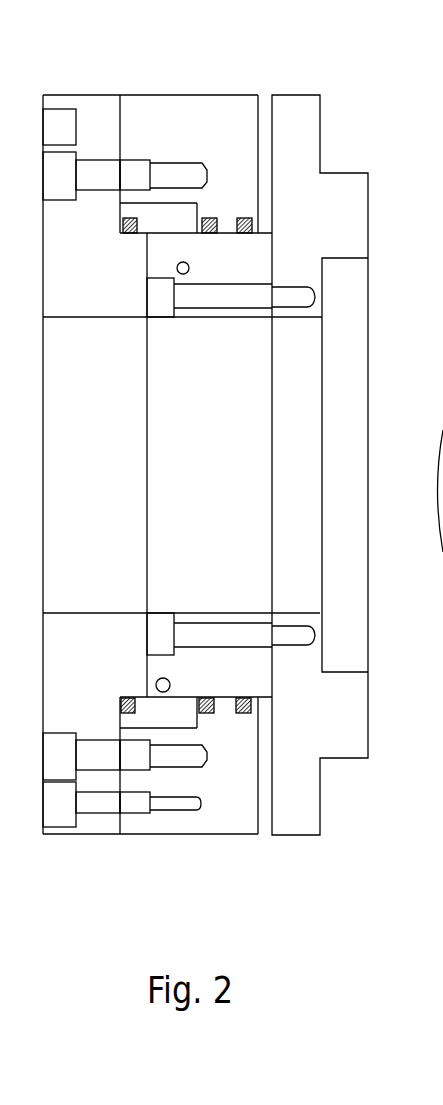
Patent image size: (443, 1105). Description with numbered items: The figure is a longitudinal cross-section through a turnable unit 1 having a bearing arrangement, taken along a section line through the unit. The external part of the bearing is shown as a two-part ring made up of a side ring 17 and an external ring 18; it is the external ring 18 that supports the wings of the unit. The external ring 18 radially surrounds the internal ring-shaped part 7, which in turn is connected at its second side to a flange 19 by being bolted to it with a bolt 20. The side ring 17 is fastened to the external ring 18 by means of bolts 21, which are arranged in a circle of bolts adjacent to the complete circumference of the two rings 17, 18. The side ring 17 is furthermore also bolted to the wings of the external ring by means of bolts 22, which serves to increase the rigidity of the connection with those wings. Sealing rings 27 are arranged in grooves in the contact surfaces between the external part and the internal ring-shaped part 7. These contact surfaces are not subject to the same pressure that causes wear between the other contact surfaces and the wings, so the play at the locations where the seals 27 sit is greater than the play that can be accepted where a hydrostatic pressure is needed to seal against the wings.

The sensor assembly 1 is at (143, 73).
The internal ring-shaped part 7 is at (233, 682).
The side ring 17 is at (100, 825).
The external ring 18 is at (233, 815).
The flange 19 is at (333, 715).
The bolt 20 is at (247, 633).
The bolts 21 is at (65, 760).
The bolts 22 is at (55, 815).
The sealing rings 27 is at (210, 222).